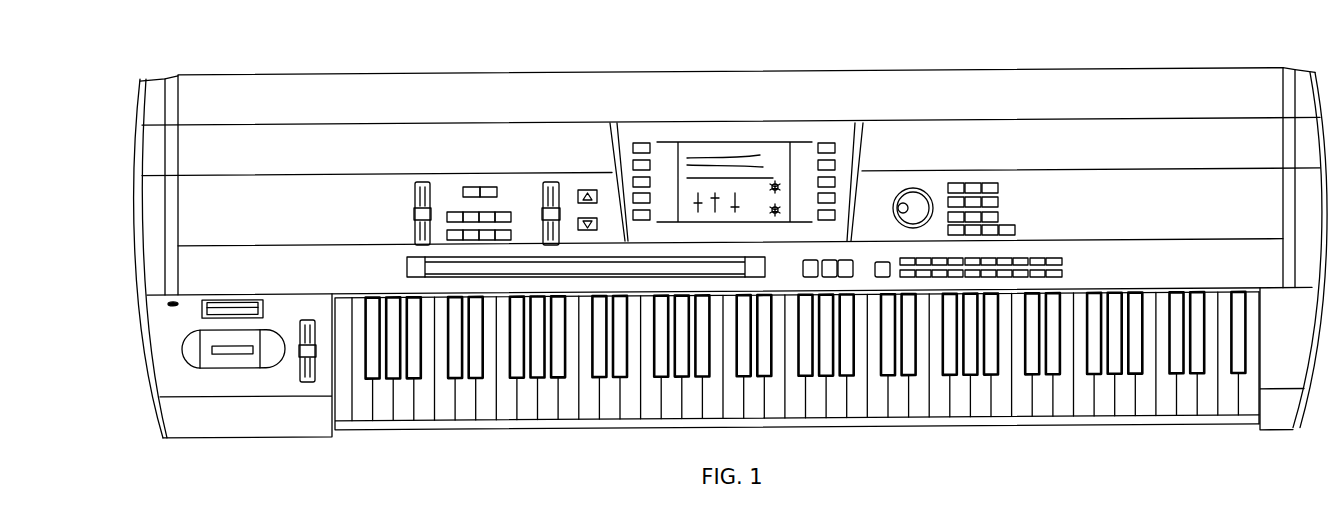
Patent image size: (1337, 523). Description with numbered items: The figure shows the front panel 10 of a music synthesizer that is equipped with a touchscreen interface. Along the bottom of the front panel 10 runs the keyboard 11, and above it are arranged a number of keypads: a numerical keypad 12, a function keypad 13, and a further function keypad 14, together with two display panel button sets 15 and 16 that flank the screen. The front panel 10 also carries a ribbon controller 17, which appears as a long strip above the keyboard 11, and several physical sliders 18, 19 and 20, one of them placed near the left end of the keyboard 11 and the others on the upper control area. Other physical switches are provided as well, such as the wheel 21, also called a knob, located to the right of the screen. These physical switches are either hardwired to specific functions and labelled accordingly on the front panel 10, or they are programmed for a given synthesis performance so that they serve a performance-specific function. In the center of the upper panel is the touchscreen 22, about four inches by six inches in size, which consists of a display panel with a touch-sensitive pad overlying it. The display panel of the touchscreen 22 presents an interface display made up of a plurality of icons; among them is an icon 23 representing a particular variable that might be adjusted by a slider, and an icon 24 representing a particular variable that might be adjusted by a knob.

The music synthesizer front panel 10 is at (1040, 68).
The keyboard 11 is at (922, 408).
The numerical keypad 12 is at (988, 210).
The function keypad 13 is at (1062, 263).
The function keypad 14 is at (462, 213).
The display panel button set 15 is at (648, 142).
The display panel button set 16 is at (828, 142).
The ribbon controller 17 is at (447, 267).
The physical slider 18 is at (300, 320).
The physical slider 19 is at (413, 197).
The physical slider 20 is at (552, 182).
The wheel 21 is at (922, 192).
The touchscreen 22 is at (750, 124).
The icon 23 is at (695, 193).
The icon 24 is at (777, 177).